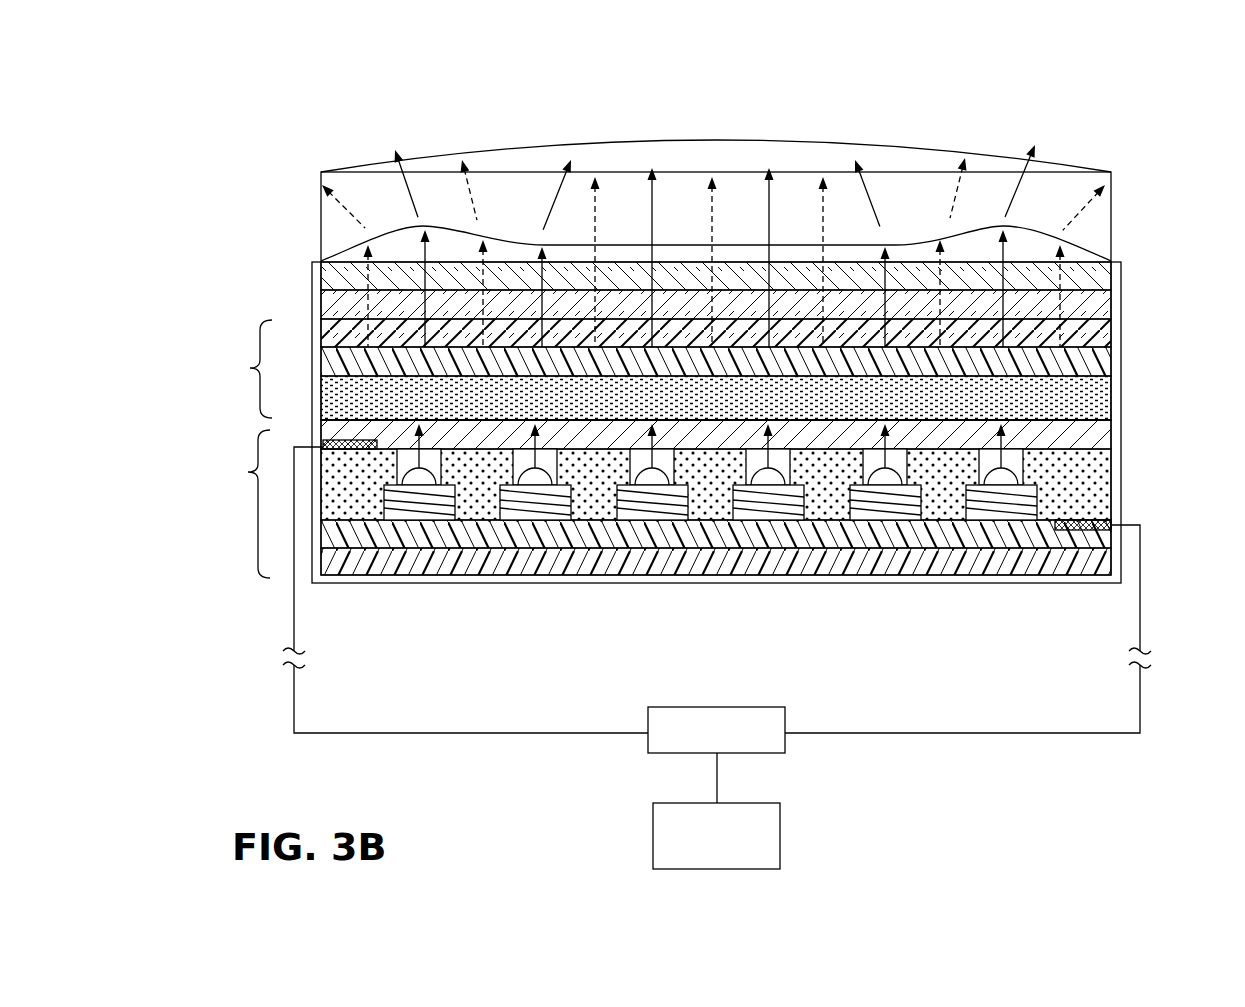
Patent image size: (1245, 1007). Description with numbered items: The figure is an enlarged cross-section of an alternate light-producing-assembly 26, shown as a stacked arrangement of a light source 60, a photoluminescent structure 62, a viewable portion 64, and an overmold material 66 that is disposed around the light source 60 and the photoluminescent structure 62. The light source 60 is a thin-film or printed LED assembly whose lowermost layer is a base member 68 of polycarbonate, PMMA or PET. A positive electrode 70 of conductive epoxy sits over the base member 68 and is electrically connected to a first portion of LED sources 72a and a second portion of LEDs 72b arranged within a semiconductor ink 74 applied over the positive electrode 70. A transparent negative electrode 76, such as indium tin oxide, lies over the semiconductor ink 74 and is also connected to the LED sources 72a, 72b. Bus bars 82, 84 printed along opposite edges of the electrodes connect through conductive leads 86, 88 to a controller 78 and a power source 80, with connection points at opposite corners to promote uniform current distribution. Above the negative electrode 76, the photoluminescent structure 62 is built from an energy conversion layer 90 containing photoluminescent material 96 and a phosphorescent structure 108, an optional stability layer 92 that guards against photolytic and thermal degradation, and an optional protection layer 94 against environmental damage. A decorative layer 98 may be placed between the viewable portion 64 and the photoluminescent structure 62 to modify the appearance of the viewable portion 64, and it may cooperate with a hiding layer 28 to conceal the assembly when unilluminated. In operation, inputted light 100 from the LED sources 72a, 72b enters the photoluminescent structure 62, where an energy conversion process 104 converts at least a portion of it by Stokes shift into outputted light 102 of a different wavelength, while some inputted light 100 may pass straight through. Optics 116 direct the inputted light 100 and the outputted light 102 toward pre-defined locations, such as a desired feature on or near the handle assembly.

The light-producing-assembly 26 is at (1130, 194).
The hiding layer 28 is at (1075, 186).
The light source 60 is at (242, 504).
The photoluminescent structure 62 is at (246, 369).
The viewable portion 64 is at (1075, 255).
The overmold material 66 is at (1118, 302).
The base member 68 is at (1098, 562).
The positive electrode 70 is at (1098, 538).
The LED sources 72a is at (425, 506).
The LEDs 72b is at (535, 506).
The semiconductor ink 74 is at (1095, 462).
The negative electrode 76 is at (1105, 440).
The controller 78 is at (785, 746).
The power source 80 is at (780, 820).
The bus bar 82 is at (1093, 518).
The bus bar 84 is at (330, 440).
The conductive lead 86 is at (1142, 622).
The conductive lead 88 is at (294, 622).
The energy conversion layer 90 is at (1113, 403).
The stability layer 92 is at (1100, 360).
The protection layer 94 is at (1098, 333).
The photoluminescent material 96 is at (1096, 397).
The decorative layer 98 is at (1098, 313).
The inputted light 100 is at (770, 200).
The outputted light 102 is at (712, 226).
The energy conversion process 104 is at (1042, 97).
The phosphorescent structure 108 is at (345, 278).
The optics 116 is at (407, 227).